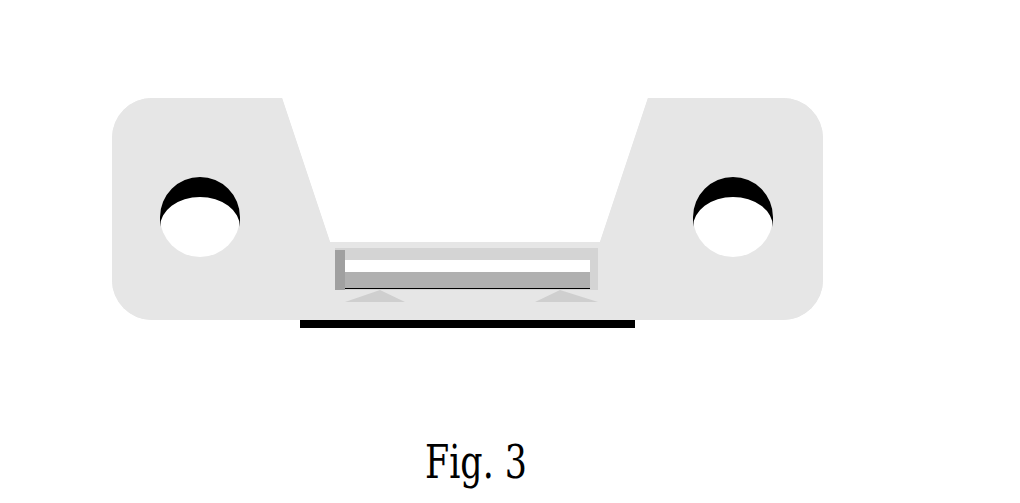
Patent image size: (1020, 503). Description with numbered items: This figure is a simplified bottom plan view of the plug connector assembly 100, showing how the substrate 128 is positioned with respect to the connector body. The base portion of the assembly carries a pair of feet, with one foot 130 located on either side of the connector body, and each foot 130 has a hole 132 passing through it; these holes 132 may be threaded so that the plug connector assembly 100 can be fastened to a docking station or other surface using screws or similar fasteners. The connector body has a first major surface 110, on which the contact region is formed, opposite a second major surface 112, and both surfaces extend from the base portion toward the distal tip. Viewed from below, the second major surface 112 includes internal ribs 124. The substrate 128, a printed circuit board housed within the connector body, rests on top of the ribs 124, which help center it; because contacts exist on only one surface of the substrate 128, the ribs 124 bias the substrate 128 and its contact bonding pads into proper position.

The plug connector assembly 100 is at (519, 86).
The first major surface 110 is at (465, 240).
The second major surface 112 is at (468, 324).
The internal ribs 124 is at (390, 295).
The substrate 128 is at (449, 279).
The foot 130 is at (230, 130).
The hole 132 is at (200, 223).